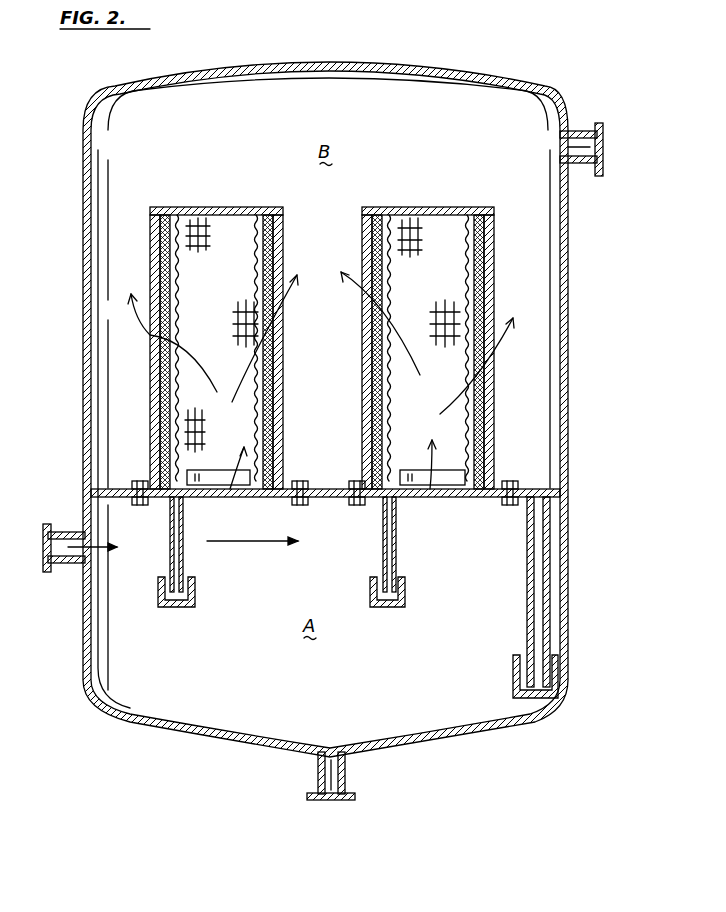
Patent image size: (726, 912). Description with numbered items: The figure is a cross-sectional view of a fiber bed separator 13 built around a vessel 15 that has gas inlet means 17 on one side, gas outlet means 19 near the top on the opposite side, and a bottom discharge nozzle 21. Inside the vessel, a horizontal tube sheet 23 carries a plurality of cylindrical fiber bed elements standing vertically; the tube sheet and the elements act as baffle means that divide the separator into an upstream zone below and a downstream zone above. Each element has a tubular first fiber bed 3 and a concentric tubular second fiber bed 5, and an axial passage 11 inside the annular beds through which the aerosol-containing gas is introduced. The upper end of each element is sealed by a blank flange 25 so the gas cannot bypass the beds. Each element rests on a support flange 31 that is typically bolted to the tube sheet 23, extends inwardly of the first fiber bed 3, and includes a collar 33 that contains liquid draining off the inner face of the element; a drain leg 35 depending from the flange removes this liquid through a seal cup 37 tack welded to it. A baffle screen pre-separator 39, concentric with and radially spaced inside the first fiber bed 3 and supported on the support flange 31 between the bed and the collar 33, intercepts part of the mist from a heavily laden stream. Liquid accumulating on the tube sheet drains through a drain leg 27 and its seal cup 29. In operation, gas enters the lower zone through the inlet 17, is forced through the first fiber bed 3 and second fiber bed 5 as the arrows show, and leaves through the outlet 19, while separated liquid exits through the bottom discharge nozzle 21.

The first fiber bed 3 is at (362, 373).
The second fiber bed 5 is at (362, 319).
The passage 11 is at (222, 242).
The fiber bed separator 13 is at (578, 332).
The vessel 15 is at (566, 436).
The gas inlet means 17 is at (50, 568).
The gas outlet means 19 is at (578, 132).
The bottom discharge nozzle 21 is at (344, 772).
The horizontal tube sheet 23 is at (115, 488).
The blank flange 25 is at (190, 207).
The drain leg 27 is at (546, 612).
The seal cup 29 is at (518, 700).
The support flange 31 is at (252, 498).
The collar 33 is at (228, 497).
The drain leg 35 is at (170, 548).
The seal cup 37 is at (160, 607).
The baffle screen pre-separator 39 is at (262, 432).